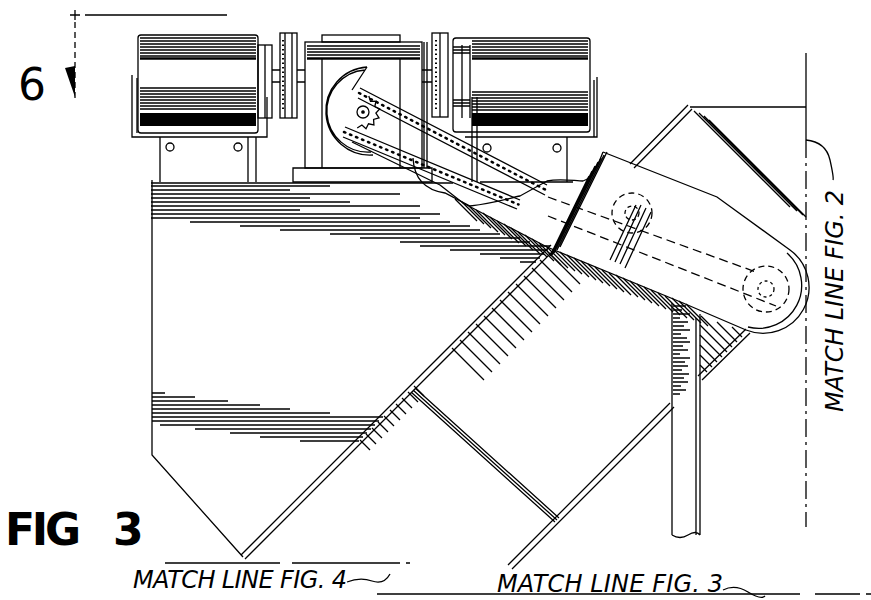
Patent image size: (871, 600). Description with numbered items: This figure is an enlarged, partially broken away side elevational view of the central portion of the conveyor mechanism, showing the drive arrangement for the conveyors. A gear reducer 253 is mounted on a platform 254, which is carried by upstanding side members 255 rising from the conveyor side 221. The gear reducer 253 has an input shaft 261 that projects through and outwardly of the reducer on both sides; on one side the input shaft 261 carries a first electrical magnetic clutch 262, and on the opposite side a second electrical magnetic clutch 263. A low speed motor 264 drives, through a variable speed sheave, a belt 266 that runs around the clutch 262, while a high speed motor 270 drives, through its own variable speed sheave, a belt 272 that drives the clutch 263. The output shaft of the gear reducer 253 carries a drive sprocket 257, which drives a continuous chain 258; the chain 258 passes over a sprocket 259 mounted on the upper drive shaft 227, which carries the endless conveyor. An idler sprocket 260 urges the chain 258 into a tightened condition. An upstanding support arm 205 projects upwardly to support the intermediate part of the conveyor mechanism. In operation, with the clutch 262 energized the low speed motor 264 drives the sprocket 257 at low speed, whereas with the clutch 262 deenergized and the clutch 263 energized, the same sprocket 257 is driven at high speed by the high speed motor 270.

The low speed motor 264 is at (140, 60).
The first electrical magnetic clutch 262 is at (264, 70).
The belt 266 is at (290, 33).
The gear reducer 253 is at (388, 46).
The input shaft 261 is at (430, 78).
The belt 272 is at (446, 44).
The second electrical magnetic clutch 263 is at (452, 76).
The high speed motor 270 is at (577, 72).
The platform 254 is at (276, 184).
The side members 255 is at (162, 267).
The side 221 is at (443, 371).
The drive sprocket 257 is at (376, 135).
The idler sprocket 260 is at (640, 197).
The chain 258 is at (748, 262).
The sprocket 259 is at (775, 302).
The upper drive shaft 227 is at (745, 291).
The support arm 205 is at (677, 467).